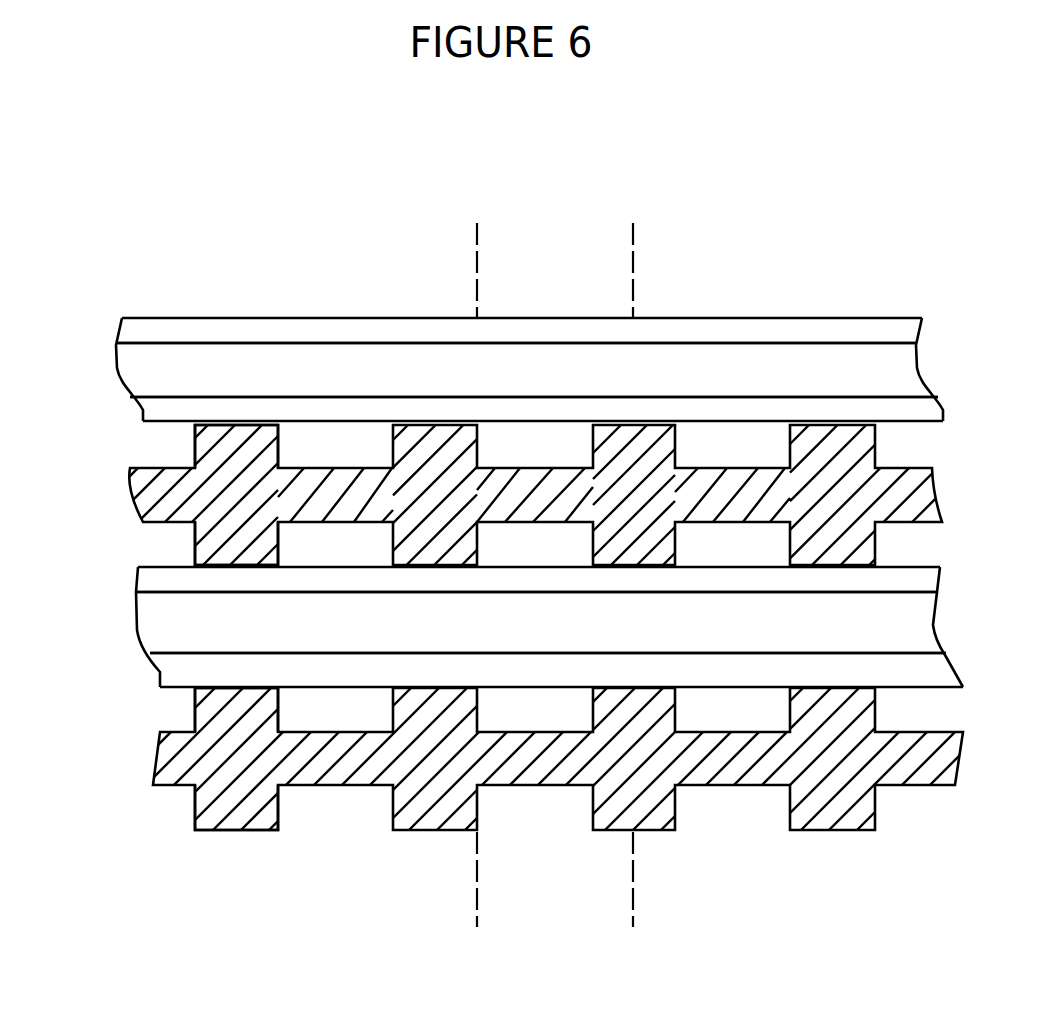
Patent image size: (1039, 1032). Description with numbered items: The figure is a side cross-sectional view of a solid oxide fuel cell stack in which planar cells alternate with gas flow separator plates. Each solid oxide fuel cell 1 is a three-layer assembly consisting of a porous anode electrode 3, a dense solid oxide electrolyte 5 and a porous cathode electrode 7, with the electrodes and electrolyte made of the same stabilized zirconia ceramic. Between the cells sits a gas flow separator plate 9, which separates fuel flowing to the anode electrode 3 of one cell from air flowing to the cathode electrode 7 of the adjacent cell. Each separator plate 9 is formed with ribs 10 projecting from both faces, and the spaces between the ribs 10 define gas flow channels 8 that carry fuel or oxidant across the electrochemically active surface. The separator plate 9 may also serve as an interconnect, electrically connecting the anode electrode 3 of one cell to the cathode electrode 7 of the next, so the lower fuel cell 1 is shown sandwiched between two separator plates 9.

The solid oxide fuel cell 1 is at (537, 494).
The porous anode electrode 3 is at (491, 447).
The dense solid oxide electrolyte 5 is at (494, 497).
The porous cathode electrode 7 is at (980, 683).
The gas flow channels 8 is at (324, 462).
The gas flow separator plate 9 is at (970, 443).
The ribs 10 is at (195, 813).